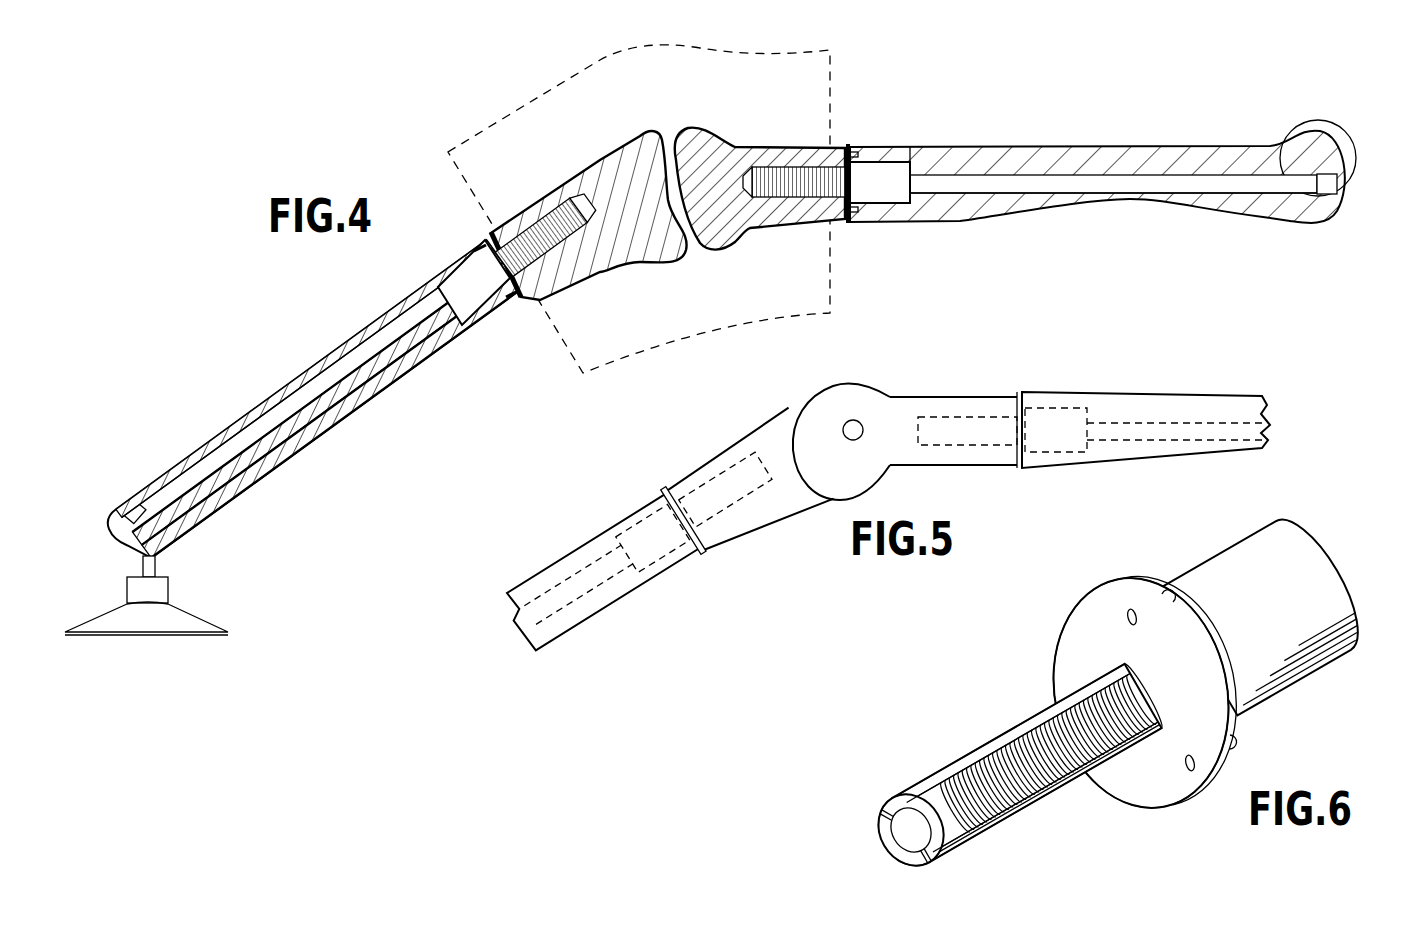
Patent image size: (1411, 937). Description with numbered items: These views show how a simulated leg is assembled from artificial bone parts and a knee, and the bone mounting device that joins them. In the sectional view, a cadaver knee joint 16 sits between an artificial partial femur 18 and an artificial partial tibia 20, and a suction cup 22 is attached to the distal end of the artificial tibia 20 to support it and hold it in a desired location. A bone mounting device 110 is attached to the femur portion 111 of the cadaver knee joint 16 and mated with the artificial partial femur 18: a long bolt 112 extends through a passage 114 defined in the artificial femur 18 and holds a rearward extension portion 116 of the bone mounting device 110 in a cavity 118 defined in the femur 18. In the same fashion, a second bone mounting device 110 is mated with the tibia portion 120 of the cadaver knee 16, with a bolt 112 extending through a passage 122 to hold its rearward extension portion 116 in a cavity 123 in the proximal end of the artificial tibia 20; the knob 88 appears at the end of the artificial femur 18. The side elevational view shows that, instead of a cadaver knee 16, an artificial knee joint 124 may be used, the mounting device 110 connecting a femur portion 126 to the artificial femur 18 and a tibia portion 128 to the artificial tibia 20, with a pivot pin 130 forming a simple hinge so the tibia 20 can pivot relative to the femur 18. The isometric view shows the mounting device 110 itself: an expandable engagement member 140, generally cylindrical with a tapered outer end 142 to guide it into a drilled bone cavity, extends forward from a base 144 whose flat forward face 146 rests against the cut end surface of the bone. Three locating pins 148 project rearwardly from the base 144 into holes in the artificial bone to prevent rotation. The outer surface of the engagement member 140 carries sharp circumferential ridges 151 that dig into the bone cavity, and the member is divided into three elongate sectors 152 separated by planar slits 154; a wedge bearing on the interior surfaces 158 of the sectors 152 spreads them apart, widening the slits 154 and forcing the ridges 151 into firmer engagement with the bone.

In FIG. 4, the cadaver knee joint 16 is at (511, 110).
In FIG. 4, the artificial partial femur 18 is at (1110, 147).
In FIG. 5, the artificial partial femur 18 is at (1143, 392).
In FIG. 4, the artificial partial tibia 20 is at (353, 407).
In FIG. 5, the artificial partial tibia 20 is at (622, 597).
In FIG. 4, the suction cup 22 is at (198, 617).
In FIG. 4, the end knob 88 is at (1310, 123).
In FIG. 4, the bone mounting device 110 is at (556, 212).
In FIG. 5, the bone mounting device 110 is at (643, 510).
In FIG. 4, the femur portion 111 is at (788, 146).
In FIG. 4, the long bolt 112 is at (358, 330).
In FIG. 5, the long bolt 112 is at (563, 570).
In FIG. 4, the passage 114 is at (1128, 197).
In FIG. 4, the rearward extension portion 116 is at (460, 287).
In FIG. 6, the rearward extension portion 116 is at (1300, 691).
In FIG. 4, the cavity 118 is at (926, 168).
In FIG. 4, the tibia portion 120 is at (592, 154).
In FIG. 4, the passage 122 is at (300, 408).
In FIG. 4, the cavity 123 is at (472, 338).
In FIG. 5, the artificial knee joint 124 is at (880, 384).
In FIG. 5, the femur portion 126 is at (952, 397).
In FIG. 5, the tibia portion 128 is at (757, 520).
In FIG. 5, the pivot pin 130 is at (845, 425).
In FIG. 6, the expandable engagement member 140 is at (1007, 703).
In FIG. 6, the tapered outer end 142 is at (903, 788).
In FIG. 6, the base 144 is at (1056, 632).
In FIG. 6, the flat forward face 146 is at (1143, 774).
In FIG. 6, the locating pin 148 is at (1163, 598).
In FIG. 6, the sharp circumferential ridges 151 is at (1017, 790).
In FIG. 6, the elongate sectors 152 is at (876, 813).
In FIG. 6, the planar slits 154 is at (889, 842).
In FIG. 6, the interior surfaces 158 is at (886, 800).